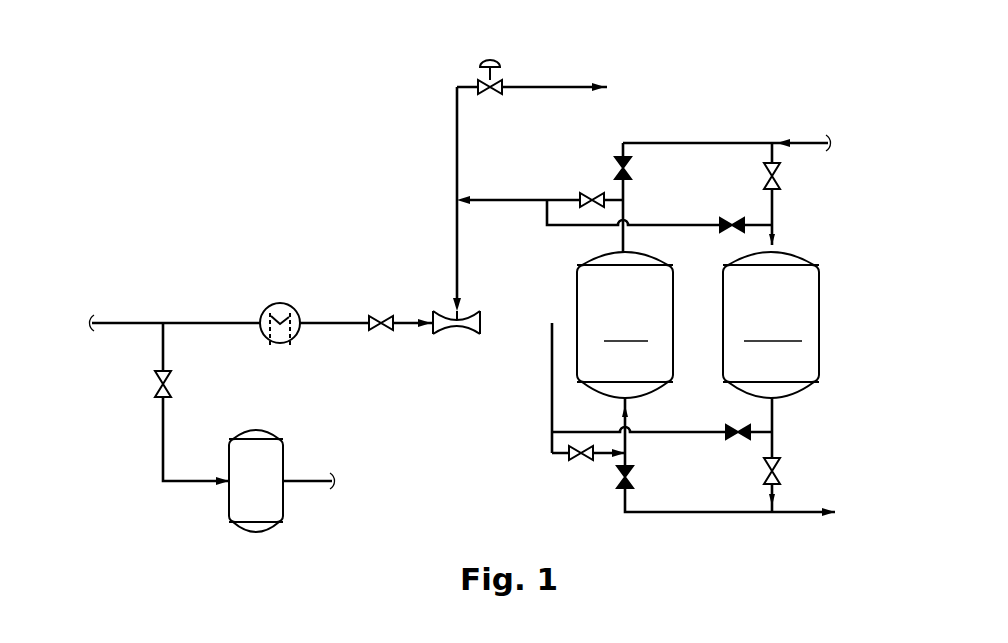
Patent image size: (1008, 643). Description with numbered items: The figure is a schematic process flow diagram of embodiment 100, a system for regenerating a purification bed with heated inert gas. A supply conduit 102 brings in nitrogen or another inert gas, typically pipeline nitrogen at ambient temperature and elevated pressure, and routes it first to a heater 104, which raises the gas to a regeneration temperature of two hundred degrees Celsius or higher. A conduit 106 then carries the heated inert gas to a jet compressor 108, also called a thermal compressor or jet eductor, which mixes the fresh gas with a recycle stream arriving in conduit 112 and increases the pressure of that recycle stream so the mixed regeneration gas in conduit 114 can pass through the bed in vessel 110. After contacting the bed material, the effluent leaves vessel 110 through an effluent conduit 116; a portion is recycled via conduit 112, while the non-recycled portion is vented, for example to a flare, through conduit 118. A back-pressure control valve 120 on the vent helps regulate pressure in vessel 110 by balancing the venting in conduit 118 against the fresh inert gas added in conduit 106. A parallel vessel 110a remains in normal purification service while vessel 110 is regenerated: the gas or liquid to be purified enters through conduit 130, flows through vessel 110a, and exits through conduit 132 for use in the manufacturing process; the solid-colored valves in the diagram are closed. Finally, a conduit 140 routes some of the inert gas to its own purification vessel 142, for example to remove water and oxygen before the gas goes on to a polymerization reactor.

The embodiment 100 is at (262, 176).
The supply conduit 102 is at (112, 321).
The heater 104 is at (278, 302).
The conduit 106 is at (355, 321).
The jet compressor 108 is at (469, 336).
The vessel 110 is at (625, 325).
The vessel 110a is at (771, 325).
The conduit 112 is at (455, 243).
The conduit 114 is at (549, 400).
The effluent conduit 116 is at (490, 198).
The conduit 118 is at (530, 85).
The back-pressure control valve 120 is at (487, 60).
The conduit 130 is at (745, 142).
The conduit 132 is at (785, 514).
The conduit 140 is at (160, 438).
The vessel 142 is at (228, 503).